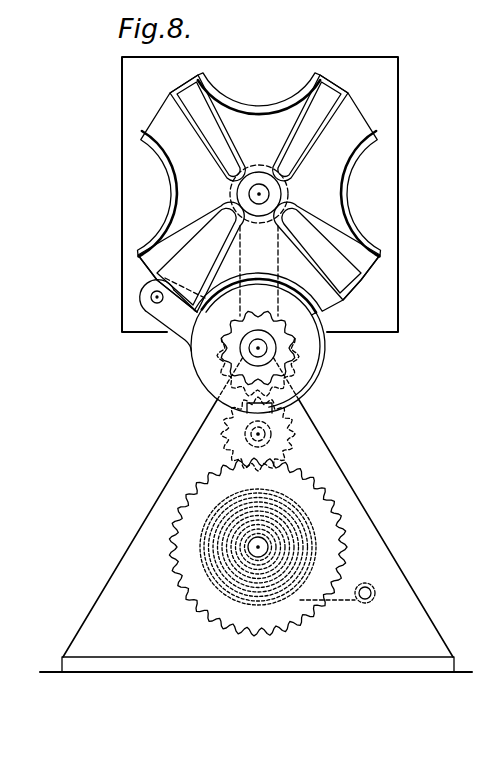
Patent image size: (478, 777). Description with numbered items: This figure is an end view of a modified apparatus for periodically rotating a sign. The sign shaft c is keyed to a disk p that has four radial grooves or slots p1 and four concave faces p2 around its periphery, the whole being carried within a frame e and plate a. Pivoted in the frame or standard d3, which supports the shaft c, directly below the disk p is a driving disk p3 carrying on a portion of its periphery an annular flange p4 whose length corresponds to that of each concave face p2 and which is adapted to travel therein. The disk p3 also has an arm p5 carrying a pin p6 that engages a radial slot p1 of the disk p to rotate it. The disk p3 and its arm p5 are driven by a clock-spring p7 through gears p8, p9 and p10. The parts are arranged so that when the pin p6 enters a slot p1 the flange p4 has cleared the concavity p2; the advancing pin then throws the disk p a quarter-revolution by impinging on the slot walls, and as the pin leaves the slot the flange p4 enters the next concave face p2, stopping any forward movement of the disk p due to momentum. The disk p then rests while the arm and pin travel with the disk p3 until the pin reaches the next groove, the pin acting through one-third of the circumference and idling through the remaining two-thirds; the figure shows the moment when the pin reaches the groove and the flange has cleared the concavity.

The frame e is at (262, 57).
The plate a is at (385, 243).
The disk p is at (259, 194).
The radial grooves or slots p1 is at (357, 302).
The concave faces p2 is at (258, 273).
The shaft c is at (262, 194).
The disk p3 is at (196, 367).
The annular flange p4 is at (321, 360).
The arm p5 is at (168, 308).
The pin p6 is at (150, 297).
The gear p10 is at (286, 353).
The gear p9 is at (300, 476).
The clock-spring p7 is at (262, 553).
The gear p8 is at (172, 560).
The frame or standard d3 is at (402, 587).